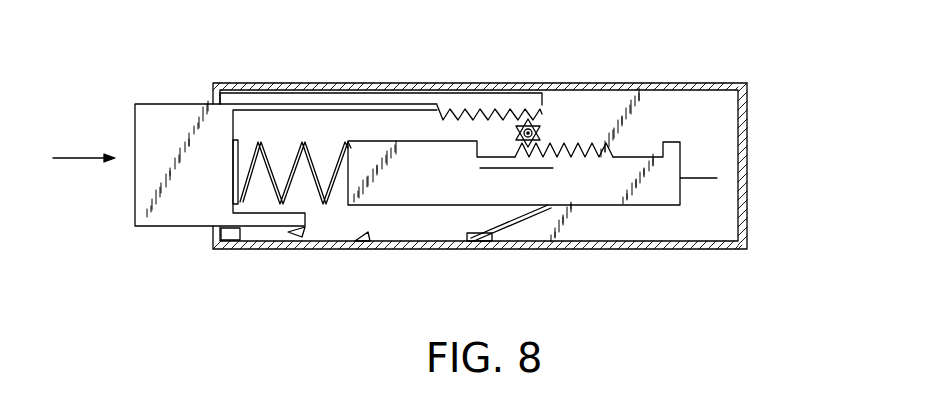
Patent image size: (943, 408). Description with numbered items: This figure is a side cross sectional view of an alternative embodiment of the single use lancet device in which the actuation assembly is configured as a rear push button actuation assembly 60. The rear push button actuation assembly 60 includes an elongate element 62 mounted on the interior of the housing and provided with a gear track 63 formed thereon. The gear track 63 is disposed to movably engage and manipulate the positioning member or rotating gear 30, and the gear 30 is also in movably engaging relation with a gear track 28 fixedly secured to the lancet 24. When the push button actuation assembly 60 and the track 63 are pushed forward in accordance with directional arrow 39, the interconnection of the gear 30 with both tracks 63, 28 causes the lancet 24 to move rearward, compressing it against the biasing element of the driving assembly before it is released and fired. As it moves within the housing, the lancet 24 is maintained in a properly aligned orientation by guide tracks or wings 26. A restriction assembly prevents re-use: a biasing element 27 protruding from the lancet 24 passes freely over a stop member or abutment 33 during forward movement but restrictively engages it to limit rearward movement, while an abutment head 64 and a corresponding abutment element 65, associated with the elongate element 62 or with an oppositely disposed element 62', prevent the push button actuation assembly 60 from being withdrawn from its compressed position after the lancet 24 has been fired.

The directional arrow 39 is at (73, 158).
The rear push button actuation assembly 60 is at (163, 98).
The elongate element 62 is at (381, 64).
The oppositely disposed element 62' is at (228, 269).
The gear track 63 is at (443, 110).
The gear member 30 is at (540, 126).
The gear track 28 is at (618, 148).
The lancet 24 is at (609, 188).
The guide tracks or wings 26 is at (488, 168).
The biasing element 27 is at (538, 247).
The stop member or abutment 33 is at (497, 245).
The abutment head 64 is at (303, 243).
The abutment element 65 is at (375, 247).